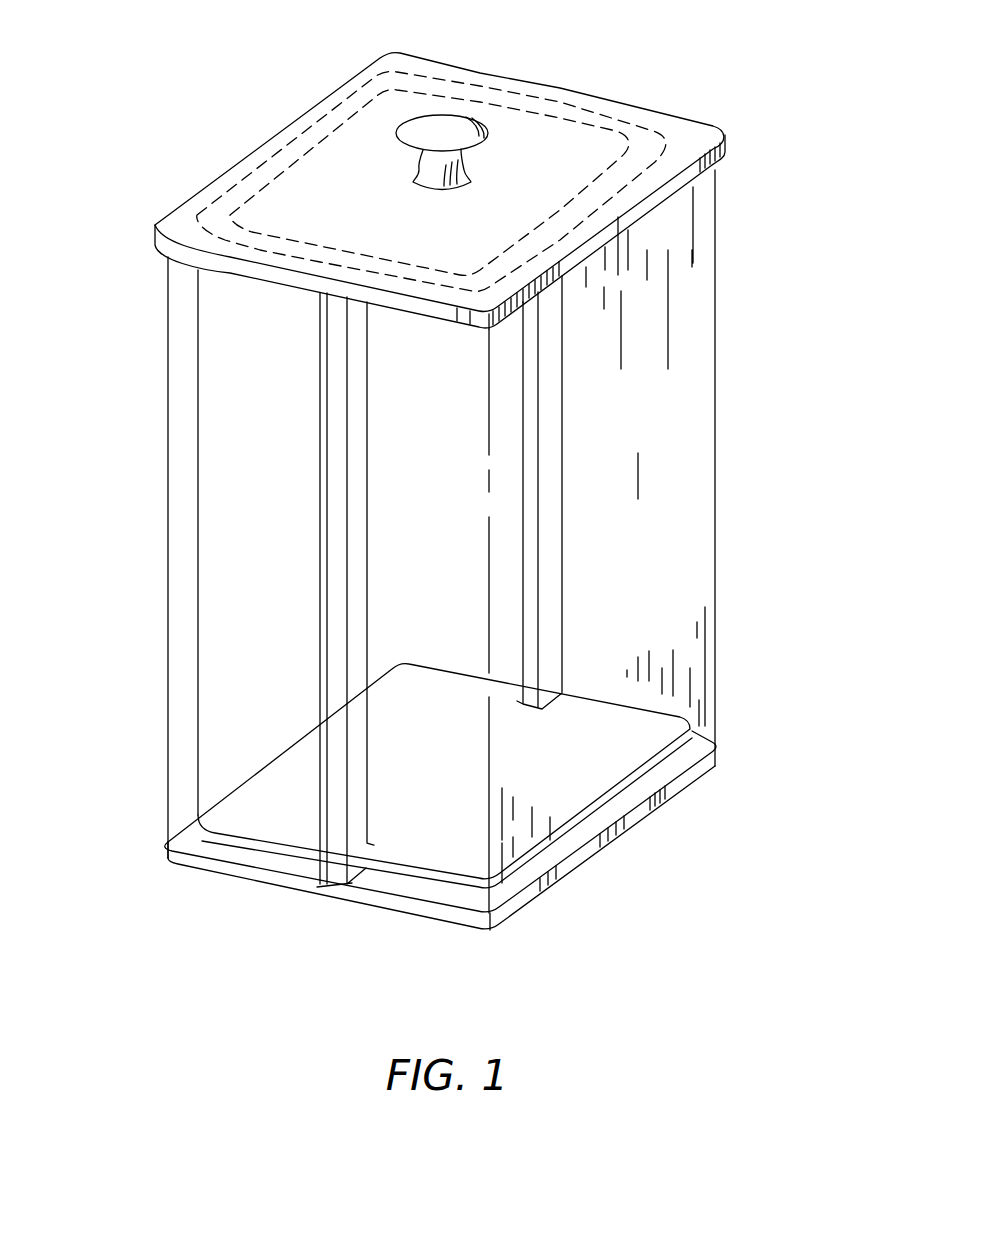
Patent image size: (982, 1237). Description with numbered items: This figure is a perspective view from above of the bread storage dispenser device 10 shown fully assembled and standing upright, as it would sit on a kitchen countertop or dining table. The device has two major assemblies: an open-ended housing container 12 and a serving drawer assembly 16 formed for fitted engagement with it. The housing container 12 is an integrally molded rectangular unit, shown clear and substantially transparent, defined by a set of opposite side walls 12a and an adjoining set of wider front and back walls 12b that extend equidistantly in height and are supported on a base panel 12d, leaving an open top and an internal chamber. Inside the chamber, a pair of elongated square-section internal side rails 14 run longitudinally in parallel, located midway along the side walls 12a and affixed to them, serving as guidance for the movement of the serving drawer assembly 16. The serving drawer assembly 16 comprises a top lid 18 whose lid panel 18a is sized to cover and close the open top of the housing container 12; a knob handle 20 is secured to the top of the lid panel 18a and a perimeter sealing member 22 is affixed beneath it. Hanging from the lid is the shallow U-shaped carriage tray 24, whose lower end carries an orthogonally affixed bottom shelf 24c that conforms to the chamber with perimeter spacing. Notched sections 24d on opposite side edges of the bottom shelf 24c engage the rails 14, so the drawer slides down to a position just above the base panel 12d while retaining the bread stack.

The bread storage dispenser device 10 is at (268, 95).
The housing container 12 is at (712, 283).
The set of opposite side walls of container 12a is at (168, 323).
The front and back walls of container 12b is at (718, 483).
The base panel of container 12d is at (206, 876).
The internal side rails 14 is at (337, 872).
The serving drawer assembly 16 is at (188, 431).
The top lid 18 is at (629, 95).
The lid panel 18a is at (727, 153).
The knob handle 20 is at (478, 122).
The sealing member 22 is at (277, 145).
The carriage tray 24 is at (197, 530).
The bottom shelf 24c is at (418, 872).
The notched sections 24d is at (358, 858).